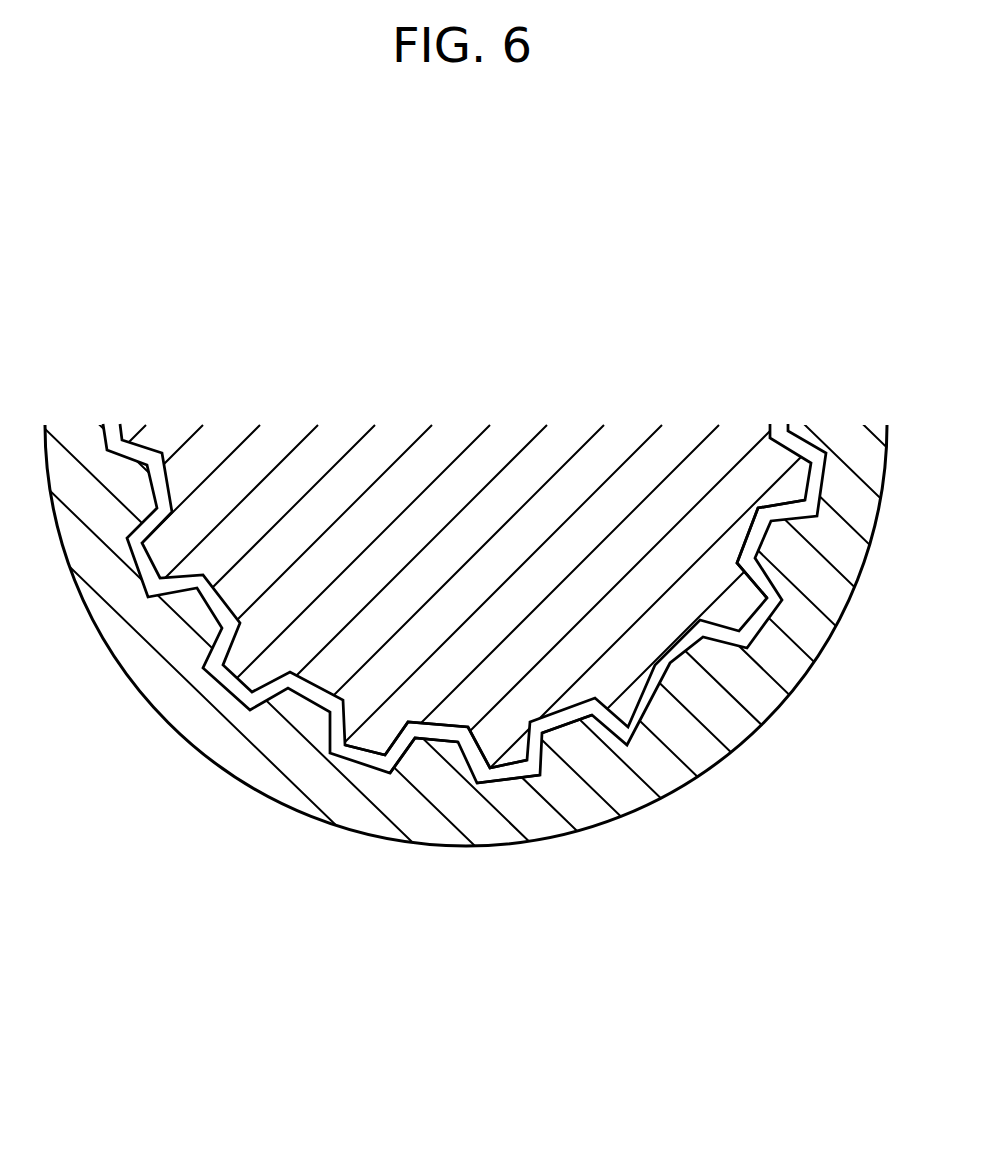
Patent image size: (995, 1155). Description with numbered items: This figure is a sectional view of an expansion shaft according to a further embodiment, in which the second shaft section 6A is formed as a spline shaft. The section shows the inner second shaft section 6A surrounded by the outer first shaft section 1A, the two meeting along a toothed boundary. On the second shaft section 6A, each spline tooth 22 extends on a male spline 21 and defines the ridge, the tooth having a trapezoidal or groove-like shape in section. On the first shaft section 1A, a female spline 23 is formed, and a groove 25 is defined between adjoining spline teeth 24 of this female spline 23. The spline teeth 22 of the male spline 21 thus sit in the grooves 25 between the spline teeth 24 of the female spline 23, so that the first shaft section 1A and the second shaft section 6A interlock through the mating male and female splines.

The first shaft section 1A is at (165, 717).
The second shaft section 6A is at (491, 525).
The male spline 21 is at (757, 620).
The spline tooth 22 is at (500, 742).
The female spline 23 is at (758, 545).
The spline teeth 24 is at (433, 767).
The groove 25 is at (512, 763).